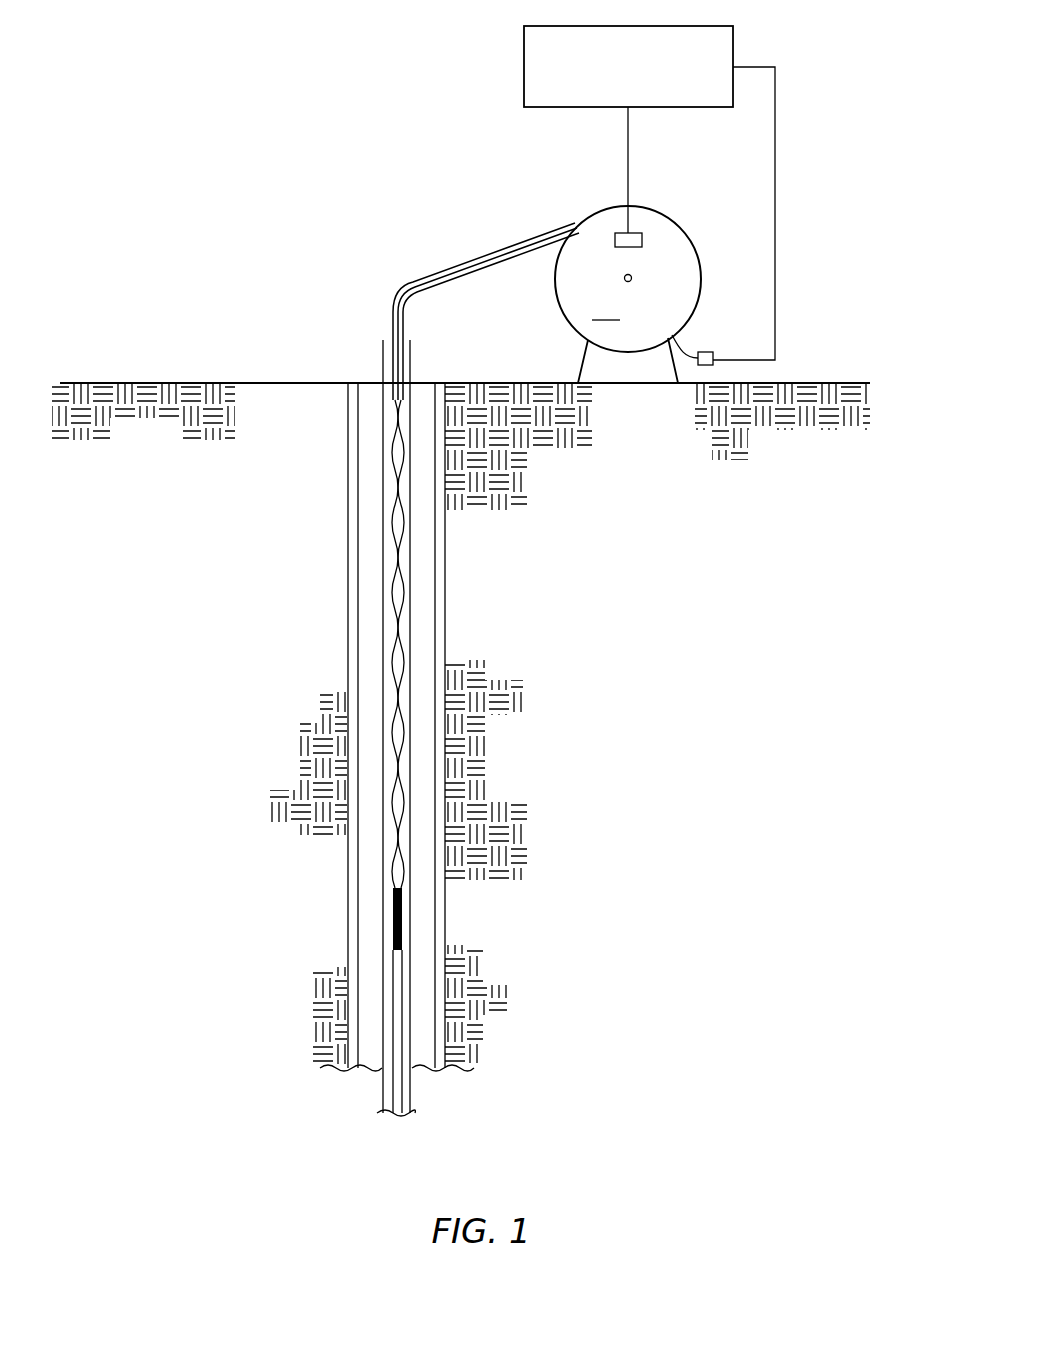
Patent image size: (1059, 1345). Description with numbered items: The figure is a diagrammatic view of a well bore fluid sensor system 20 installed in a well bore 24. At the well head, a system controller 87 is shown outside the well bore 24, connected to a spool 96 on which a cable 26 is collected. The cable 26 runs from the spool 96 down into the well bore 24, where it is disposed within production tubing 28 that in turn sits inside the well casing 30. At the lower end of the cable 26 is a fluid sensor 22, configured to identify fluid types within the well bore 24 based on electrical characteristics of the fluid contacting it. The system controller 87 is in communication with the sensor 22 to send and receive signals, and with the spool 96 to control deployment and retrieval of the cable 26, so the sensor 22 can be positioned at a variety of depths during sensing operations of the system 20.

The sensor system 20 is at (358, 138).
The fluid sensor 22 is at (393, 910).
The well bore 24 is at (358, 574).
The cable 26 is at (390, 333).
The production tubing 28 is at (487, 262).
The well casing 30 is at (440, 600).
The system controller 87 is at (733, 43).
The spool 96 is at (634, 245).